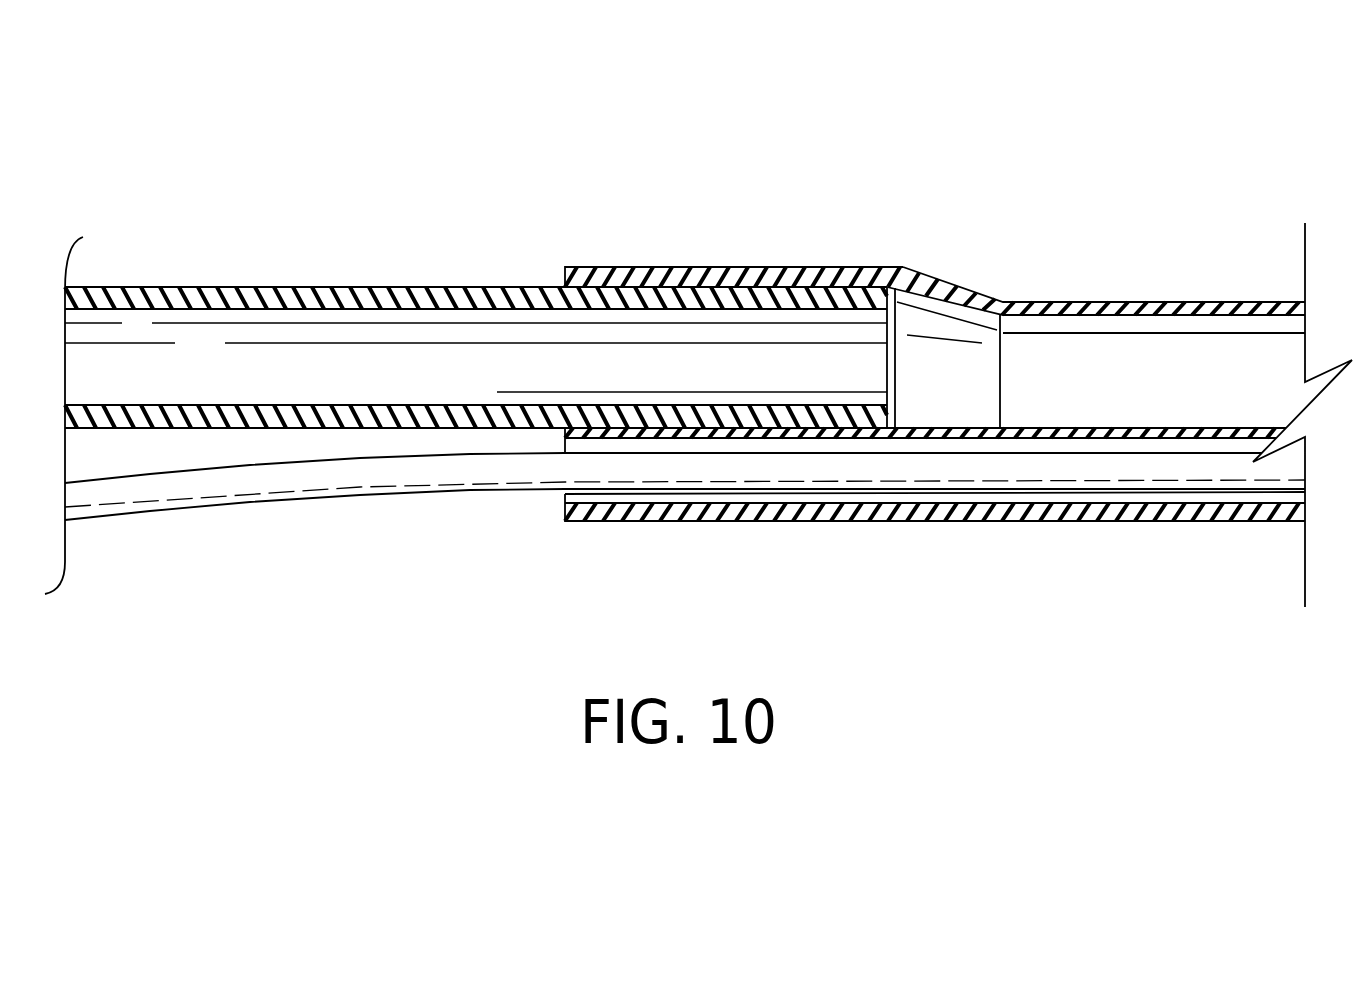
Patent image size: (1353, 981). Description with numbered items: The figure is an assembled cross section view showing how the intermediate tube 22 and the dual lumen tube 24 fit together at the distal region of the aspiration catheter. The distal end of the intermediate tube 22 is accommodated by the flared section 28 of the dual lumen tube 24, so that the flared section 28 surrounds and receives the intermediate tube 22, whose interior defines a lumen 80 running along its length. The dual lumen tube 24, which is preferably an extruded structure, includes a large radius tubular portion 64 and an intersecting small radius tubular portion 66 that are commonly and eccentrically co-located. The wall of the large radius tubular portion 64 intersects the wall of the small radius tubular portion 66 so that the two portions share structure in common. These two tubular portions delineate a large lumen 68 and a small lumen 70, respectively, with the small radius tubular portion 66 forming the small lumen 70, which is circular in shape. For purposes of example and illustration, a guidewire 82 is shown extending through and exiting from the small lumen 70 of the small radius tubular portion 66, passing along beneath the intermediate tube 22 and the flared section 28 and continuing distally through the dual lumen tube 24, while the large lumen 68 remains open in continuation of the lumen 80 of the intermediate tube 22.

The intermediate tube 22 is at (392, 300).
The dual lumen tube 24 is at (1216, 268).
The flared section 28 is at (795, 267).
The large radius tubular portion 64 is at (1238, 298).
The small radius tubular portion 66 is at (955, 430).
The large lumen 68 is at (1023, 357).
The small lumen 70 is at (1137, 500).
The lumen 80 is at (278, 362).
The guidewire 82 is at (278, 478).